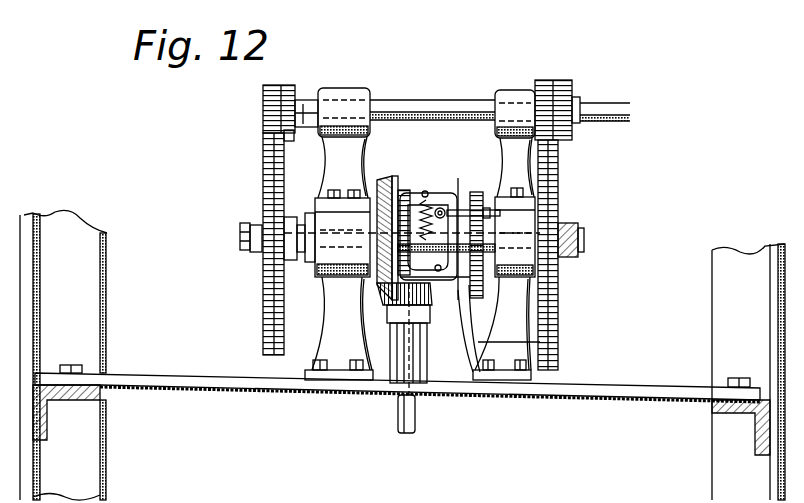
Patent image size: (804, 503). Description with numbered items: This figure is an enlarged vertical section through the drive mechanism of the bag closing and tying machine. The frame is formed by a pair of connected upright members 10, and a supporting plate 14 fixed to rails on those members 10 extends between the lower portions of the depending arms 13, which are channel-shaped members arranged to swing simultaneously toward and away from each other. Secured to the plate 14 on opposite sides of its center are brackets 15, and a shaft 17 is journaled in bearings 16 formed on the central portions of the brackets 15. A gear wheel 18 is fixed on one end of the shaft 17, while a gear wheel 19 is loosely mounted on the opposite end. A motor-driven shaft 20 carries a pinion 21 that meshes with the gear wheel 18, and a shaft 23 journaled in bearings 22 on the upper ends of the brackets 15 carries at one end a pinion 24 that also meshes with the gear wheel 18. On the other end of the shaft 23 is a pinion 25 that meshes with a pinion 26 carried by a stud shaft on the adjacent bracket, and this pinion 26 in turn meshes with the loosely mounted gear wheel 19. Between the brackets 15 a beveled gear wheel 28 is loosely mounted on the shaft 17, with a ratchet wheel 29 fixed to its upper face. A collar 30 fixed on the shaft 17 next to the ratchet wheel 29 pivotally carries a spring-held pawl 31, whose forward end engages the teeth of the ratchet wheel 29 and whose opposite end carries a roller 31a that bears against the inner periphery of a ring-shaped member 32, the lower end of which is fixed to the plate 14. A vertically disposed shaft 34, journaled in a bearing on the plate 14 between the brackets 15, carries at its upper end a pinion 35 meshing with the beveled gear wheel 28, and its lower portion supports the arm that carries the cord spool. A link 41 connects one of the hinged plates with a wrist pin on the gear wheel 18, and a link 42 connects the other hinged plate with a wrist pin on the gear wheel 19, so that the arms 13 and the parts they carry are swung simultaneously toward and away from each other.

The upright members 10 is at (92, 308).
The depending members 13 is at (460, 178).
The supporting plate 14 is at (462, 192).
The brackets 15 is at (340, 356).
The bearings 16 is at (328, 218).
The shaft 17 is at (584, 240).
The gear wheel 18 is at (556, 310).
The gear wheel 19 is at (262, 178).
The shaft 20 is at (603, 120).
The pinion 21 is at (566, 86).
The bearings 22 is at (350, 98).
The shaft 23 is at (434, 103).
The pinion 24 is at (548, 90).
The pinion 25 is at (266, 96).
The pinion 26 is at (265, 136).
The beveled gear wheel 28 is at (384, 180).
The ratchet wheel 29 is at (403, 193).
The collar 30 is at (441, 208).
The spring-held pawl 31 is at (438, 195).
The roller 31a is at (491, 185).
The ring-shaped member 32 is at (541, 342).
The vertically disposed shaft 34 is at (403, 427).
The pinion 35 is at (377, 303).
The link 41 is at (570, 225).
The link 42 is at (240, 222).